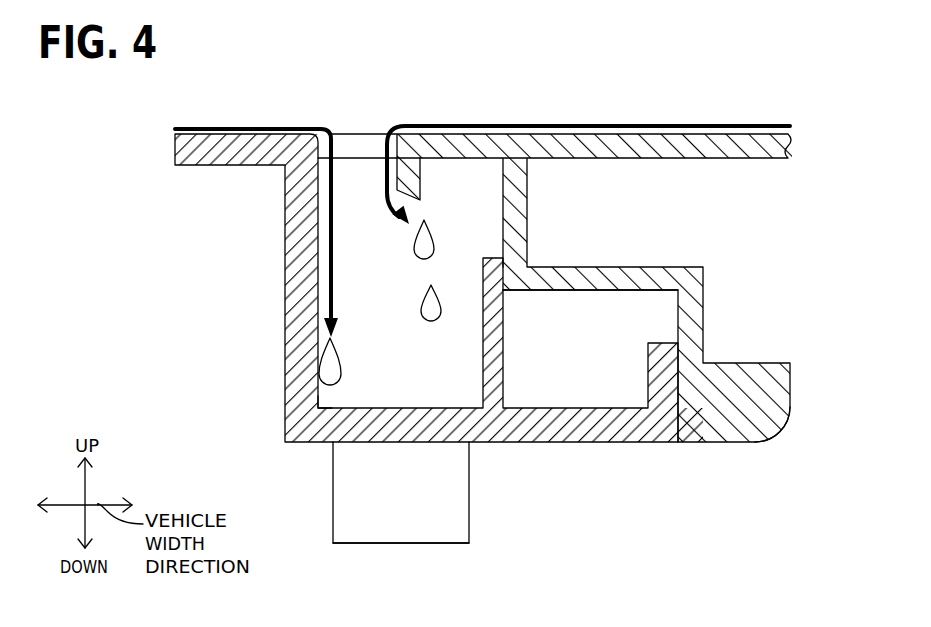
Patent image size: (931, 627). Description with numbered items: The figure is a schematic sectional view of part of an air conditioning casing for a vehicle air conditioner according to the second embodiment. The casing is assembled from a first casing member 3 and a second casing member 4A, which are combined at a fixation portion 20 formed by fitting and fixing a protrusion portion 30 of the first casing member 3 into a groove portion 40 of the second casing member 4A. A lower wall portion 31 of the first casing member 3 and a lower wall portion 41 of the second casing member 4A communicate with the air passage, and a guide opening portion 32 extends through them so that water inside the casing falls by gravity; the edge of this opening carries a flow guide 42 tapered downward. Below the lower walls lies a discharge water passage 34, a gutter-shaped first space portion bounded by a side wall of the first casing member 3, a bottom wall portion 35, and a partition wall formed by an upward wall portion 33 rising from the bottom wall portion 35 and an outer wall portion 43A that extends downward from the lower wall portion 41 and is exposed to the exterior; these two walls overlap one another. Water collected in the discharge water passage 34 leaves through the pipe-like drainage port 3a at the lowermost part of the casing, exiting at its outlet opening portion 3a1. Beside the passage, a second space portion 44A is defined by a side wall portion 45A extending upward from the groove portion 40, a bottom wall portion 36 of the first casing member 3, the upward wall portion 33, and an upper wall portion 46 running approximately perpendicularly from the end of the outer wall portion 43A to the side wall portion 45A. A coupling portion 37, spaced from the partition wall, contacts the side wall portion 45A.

The first casing member 3 is at (451, 320).
The drainage port 3a is at (470, 472).
The outlet opening portion 3a1 is at (460, 545).
The second casing member 4A is at (577, 268).
The fixation portion 20 is at (791, 424).
The protrusion portion 30 is at (728, 427).
The lower wall portion 31 is at (225, 134).
The guide opening portion 32 is at (332, 130).
The upward wall portion 33 is at (508, 318).
The discharge water passage 34 is at (345, 228).
The bottom wall portion 35 is at (356, 405).
The bottom wall portion 36 is at (604, 407).
The coupling portion 37 is at (703, 320).
The groove portion 40 is at (752, 383).
The lower wall portion 41 is at (612, 133).
The flow guide 42 is at (420, 206).
The outer wall portion 43A is at (524, 216).
The second space portion 44A is at (617, 312).
The side wall portion 45A is at (703, 298).
The upper wall portion 46 is at (603, 267).